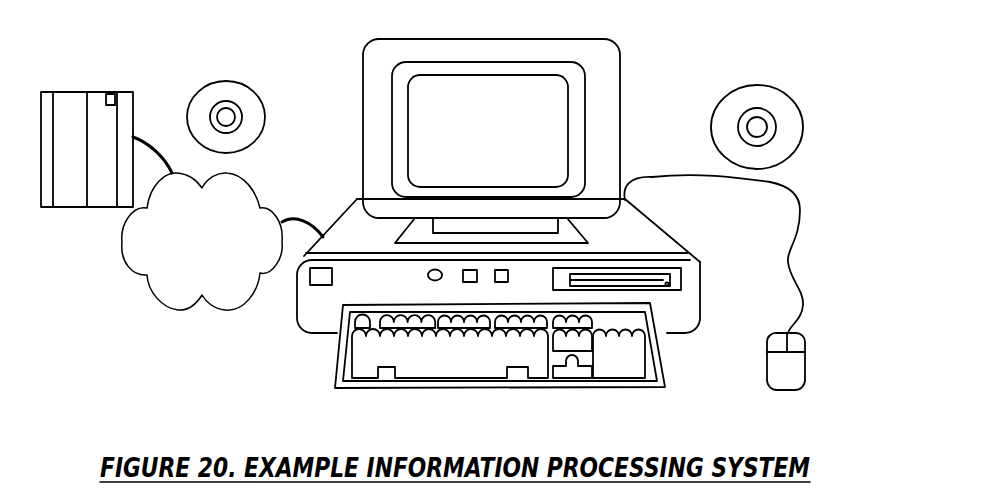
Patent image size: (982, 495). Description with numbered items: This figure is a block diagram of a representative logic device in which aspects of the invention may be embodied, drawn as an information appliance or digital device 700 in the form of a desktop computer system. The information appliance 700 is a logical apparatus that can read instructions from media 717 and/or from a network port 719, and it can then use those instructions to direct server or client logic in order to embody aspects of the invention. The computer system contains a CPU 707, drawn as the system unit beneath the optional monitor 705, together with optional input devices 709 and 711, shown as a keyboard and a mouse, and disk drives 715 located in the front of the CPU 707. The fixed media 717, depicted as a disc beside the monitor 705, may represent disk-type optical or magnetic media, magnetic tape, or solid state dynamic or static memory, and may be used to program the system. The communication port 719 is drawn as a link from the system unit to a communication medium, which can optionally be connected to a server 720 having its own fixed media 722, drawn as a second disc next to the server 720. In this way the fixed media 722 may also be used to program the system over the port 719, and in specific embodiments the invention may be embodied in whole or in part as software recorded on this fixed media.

The information appliance 700 is at (683, 46).
The monitor 705 is at (547, 110).
The CPU 707 is at (657, 233).
The input device 709 is at (405, 392).
The input device 711 is at (806, 357).
The disk drive 715 is at (683, 280).
The fixed media 717 is at (797, 96).
The communication port 719 is at (289, 214).
The server 720 is at (115, 92).
The fixed media 722 is at (262, 96).